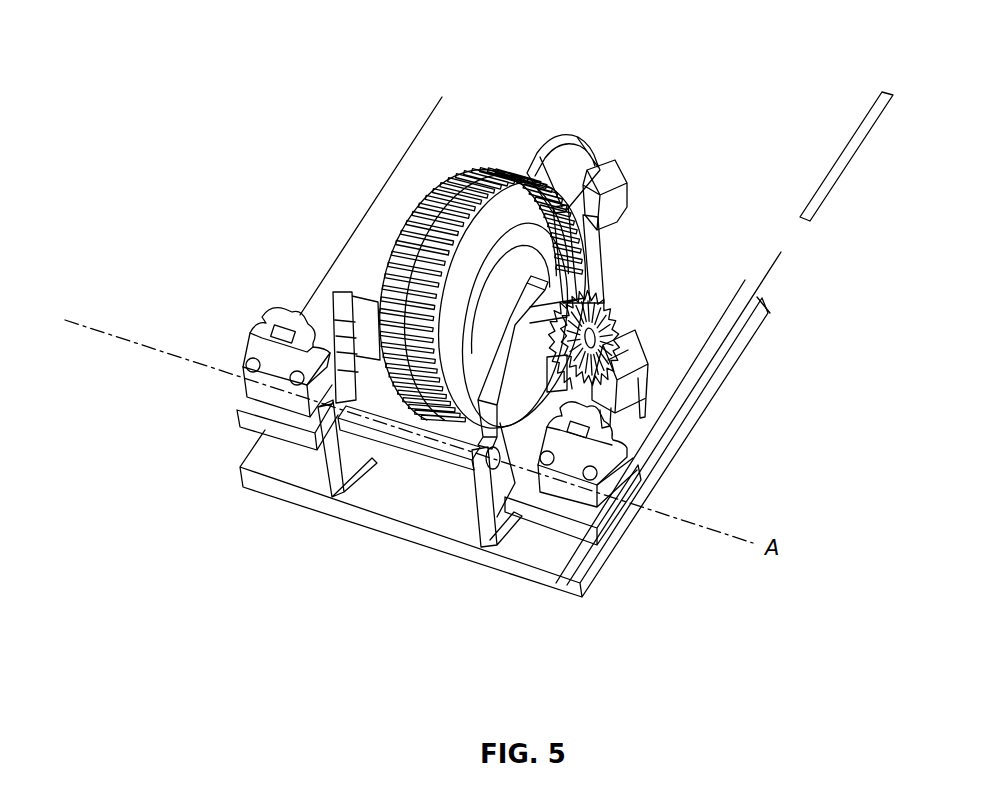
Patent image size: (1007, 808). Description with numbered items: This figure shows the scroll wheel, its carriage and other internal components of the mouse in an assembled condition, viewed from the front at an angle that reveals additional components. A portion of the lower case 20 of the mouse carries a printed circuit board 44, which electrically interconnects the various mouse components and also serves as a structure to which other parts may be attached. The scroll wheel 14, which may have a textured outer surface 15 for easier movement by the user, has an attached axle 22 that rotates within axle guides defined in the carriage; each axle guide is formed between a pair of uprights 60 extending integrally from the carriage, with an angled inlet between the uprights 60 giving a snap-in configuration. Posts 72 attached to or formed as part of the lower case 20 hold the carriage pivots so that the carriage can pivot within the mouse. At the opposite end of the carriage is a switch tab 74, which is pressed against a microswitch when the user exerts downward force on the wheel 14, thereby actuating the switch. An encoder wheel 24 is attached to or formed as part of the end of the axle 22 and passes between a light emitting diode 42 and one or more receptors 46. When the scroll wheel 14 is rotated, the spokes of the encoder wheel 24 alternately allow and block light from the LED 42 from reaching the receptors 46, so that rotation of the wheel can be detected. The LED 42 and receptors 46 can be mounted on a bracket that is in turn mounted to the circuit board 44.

The outer surface 15 is at (430, 274).
The uprights 60 is at (467, 253).
The switch tab 74 is at (555, 160).
The scroll wheel 14 is at (537, 260).
The axle 22 is at (590, 256).
The encoder wheel 24 is at (615, 294).
The receptor 46 is at (611, 360).
The light emitting diode 42 is at (560, 376).
The printed circuit board 44 is at (690, 325).
The posts 72 is at (340, 450).
The lower case 20 is at (433, 498).